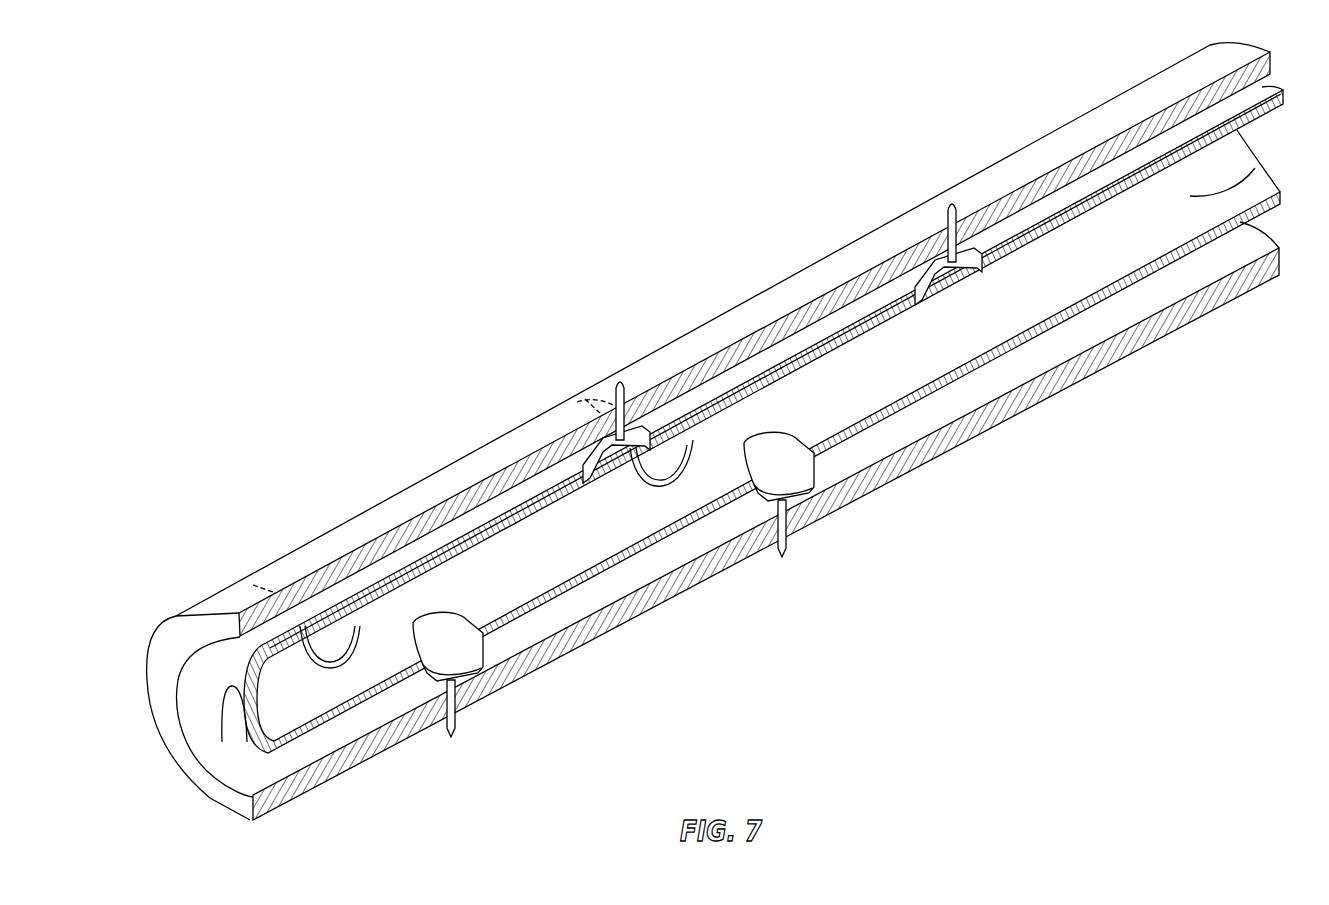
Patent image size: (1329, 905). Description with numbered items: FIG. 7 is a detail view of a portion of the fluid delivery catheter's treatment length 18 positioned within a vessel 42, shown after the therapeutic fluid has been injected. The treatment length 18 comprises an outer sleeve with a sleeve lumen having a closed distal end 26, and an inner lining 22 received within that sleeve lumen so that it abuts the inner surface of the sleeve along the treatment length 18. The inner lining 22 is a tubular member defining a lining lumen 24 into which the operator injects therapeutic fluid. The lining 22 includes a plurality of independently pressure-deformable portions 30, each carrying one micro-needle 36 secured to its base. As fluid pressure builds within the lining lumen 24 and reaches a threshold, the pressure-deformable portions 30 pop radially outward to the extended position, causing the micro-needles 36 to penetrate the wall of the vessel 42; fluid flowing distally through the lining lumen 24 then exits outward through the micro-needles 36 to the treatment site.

The treatment length 18 is at (1167, 132).
The inner lining 22 is at (1103, 287).
The lining lumen 24 is at (1258, 160).
The closed distal end 26 is at (233, 717).
The pressure-deformable portions 30 is at (757, 505).
The micro-needles 36 is at (951, 205).
The vessel 42 is at (780, 282).